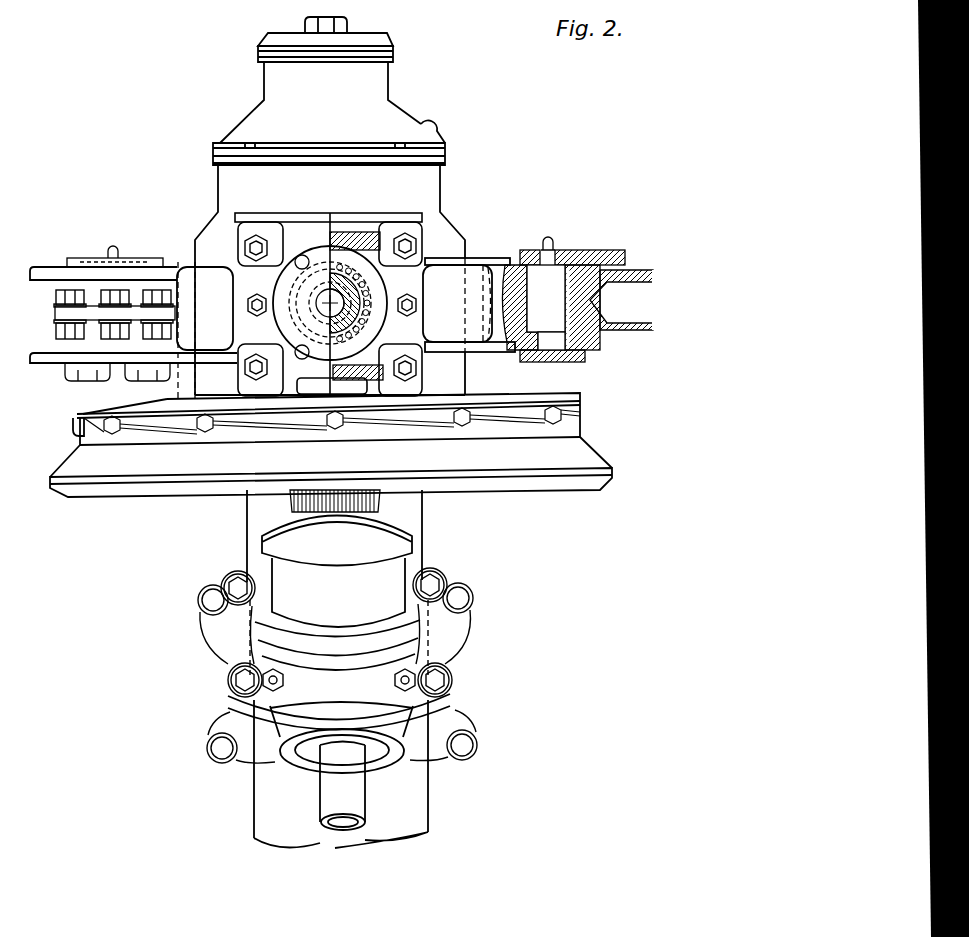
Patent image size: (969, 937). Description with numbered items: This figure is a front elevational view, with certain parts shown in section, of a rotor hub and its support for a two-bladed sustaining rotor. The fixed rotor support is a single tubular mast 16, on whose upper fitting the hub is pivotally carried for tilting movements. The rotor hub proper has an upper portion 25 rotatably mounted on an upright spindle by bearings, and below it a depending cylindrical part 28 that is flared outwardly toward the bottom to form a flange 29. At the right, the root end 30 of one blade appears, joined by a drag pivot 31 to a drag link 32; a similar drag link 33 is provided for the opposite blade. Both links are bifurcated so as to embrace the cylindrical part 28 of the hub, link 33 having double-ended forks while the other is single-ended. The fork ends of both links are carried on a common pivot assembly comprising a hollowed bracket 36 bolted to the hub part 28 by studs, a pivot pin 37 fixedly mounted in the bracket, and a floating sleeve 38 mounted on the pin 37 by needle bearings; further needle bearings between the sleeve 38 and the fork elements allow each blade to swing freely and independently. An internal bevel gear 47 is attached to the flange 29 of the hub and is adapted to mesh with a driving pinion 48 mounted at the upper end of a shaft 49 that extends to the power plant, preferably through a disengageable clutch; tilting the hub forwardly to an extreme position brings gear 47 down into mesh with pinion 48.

The tubular mast 16 is at (255, 801).
The upper portion of rotor hub 25 is at (432, 190).
The depending cylindrical part 28 is at (455, 376).
The flared flange 29 is at (498, 398).
The root end of blade 30 is at (637, 330).
The drag pivot 31 is at (560, 250).
The drag link 32 is at (473, 266).
The drag link 33 is at (182, 265).
The hollowed bracket 36 is at (326, 228).
The pivot pin 37 is at (340, 306).
The floating sleeve 38 is at (349, 284).
The internal bevel gear 47 is at (542, 492).
The driving pinion 48 is at (380, 503).
The shaft 49 is at (327, 812).